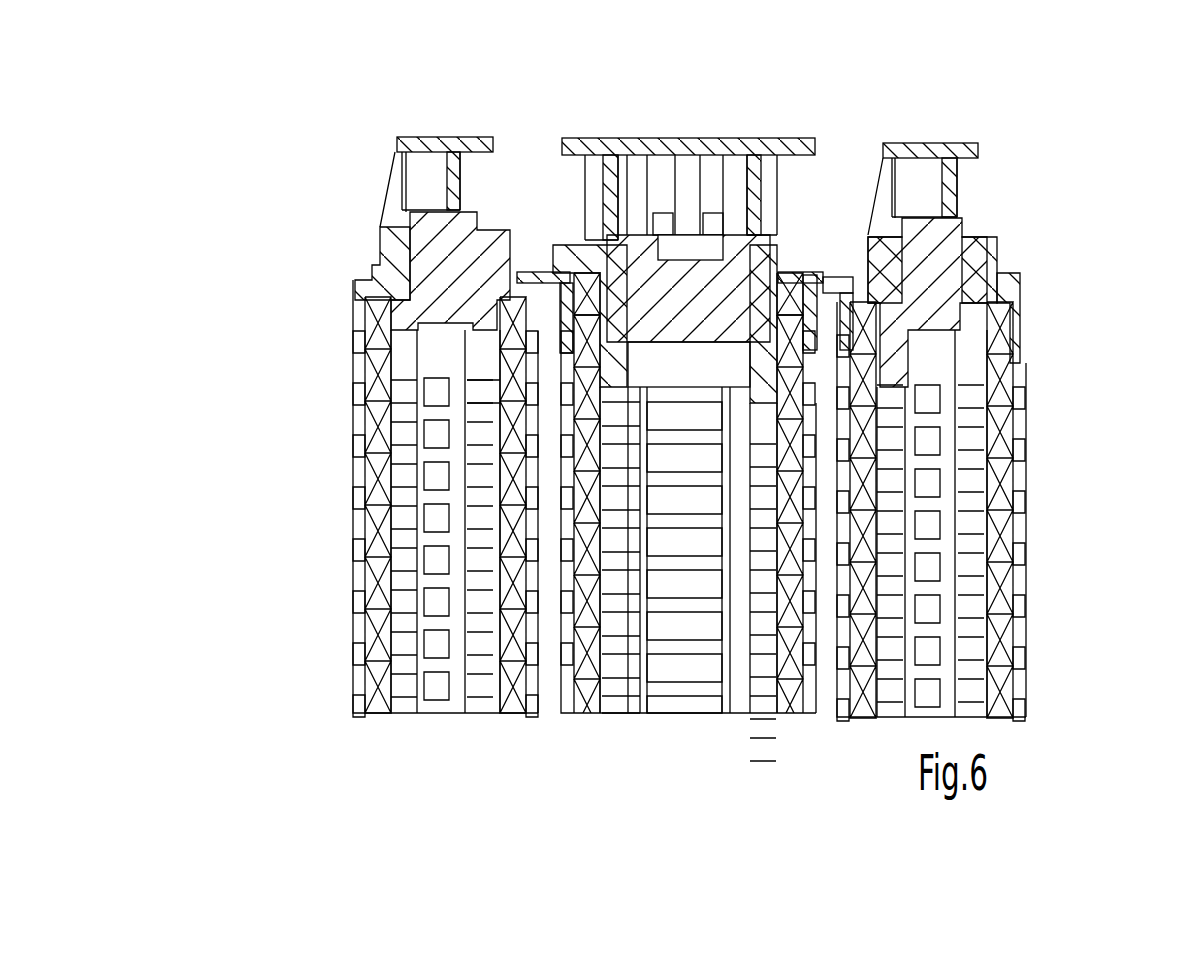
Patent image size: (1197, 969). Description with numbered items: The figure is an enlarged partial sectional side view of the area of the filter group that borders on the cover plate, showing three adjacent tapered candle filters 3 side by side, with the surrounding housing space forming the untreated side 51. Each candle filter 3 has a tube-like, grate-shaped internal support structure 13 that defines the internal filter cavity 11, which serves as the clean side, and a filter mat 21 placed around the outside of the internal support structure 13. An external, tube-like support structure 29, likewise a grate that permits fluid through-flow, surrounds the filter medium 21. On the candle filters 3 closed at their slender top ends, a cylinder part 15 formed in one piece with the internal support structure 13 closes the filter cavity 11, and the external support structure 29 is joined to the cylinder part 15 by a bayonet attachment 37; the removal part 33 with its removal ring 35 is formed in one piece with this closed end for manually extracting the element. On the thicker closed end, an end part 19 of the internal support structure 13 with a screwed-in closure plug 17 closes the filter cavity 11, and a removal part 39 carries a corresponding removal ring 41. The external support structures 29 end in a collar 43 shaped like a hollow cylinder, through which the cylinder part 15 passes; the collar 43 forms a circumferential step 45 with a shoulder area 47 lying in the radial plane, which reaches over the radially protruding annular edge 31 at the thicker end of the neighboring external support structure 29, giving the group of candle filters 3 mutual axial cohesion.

The candle filter 3 is at (337, 177).
The internal filter cavity 11 is at (433, 412).
The internal support structure 13 is at (400, 377).
The cylinder part 15 is at (443, 255).
The closure plug 17 is at (640, 275).
The end part 19 is at (760, 293).
The filter mat 21 is at (373, 630).
The external support structure 29 is at (353, 297).
The annular edge 31 is at (835, 273).
The removal part 33 is at (392, 185).
The removal ring 35 is at (437, 148).
The bayonet attachment 37 is at (484, 211).
The removal part 39 is at (590, 198).
The removal ring 41 is at (611, 150).
The collar 43 is at (488, 226).
The circumferential step 45 is at (547, 285).
The shoulder area 47 is at (357, 280).
The untreated side 51 is at (533, 477).